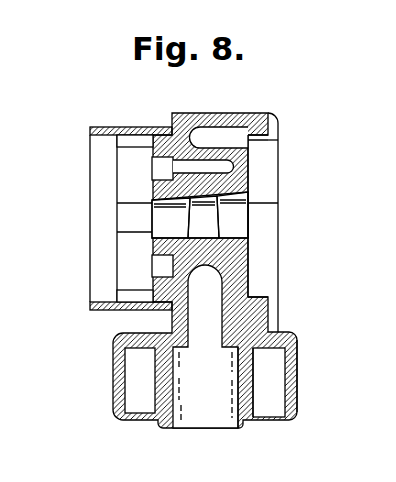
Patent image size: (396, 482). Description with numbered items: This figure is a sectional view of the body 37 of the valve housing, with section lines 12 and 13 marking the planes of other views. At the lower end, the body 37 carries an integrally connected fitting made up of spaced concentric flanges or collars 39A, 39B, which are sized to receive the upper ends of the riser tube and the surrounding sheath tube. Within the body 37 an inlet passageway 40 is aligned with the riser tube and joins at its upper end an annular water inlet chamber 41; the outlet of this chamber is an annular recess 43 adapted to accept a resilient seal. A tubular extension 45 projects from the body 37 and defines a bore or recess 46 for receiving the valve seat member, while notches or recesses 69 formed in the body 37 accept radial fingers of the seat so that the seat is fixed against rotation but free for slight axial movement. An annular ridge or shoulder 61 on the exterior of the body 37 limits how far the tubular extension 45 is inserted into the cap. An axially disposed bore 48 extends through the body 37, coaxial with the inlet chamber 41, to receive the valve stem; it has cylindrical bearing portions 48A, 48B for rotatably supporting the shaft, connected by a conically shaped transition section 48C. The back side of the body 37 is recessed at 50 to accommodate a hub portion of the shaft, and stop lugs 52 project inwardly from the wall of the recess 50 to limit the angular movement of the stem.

The body 37 is at (281, 106).
The annular ridge 61 is at (173, 118).
The stop lugs 52 is at (268, 209).
The annular water inlet chamber 41 is at (250, 167).
The tubular extension 45 is at (107, 128).
The bore 46 is at (117, 136).
The notches 69 is at (144, 140).
The annular recess 43 is at (155, 160).
The bore 48 is at (180, 221).
The cylindrical bearing portion 48A is at (160, 222).
The cylindrical bearing portion 48B is at (233, 227).
The conically shaped transition section 48C is at (207, 235).
The recess 50 is at (268, 290).
The inlet passageway 40 is at (186, 346).
The collar 39A is at (297, 390).
The collar 39B is at (253, 406).
The section line 12 is at (125, 130).
The section line 13 is at (128, 325).